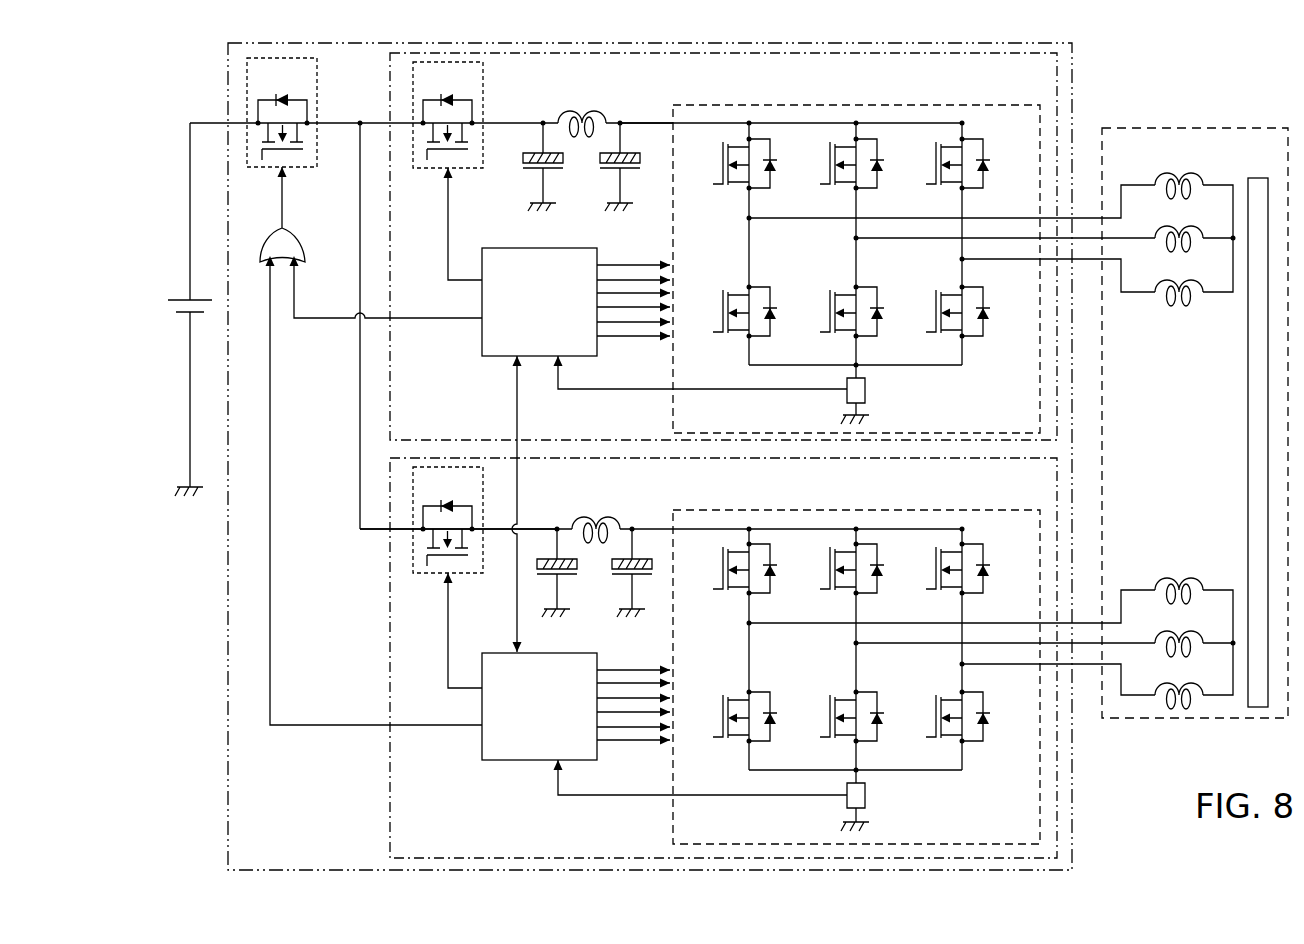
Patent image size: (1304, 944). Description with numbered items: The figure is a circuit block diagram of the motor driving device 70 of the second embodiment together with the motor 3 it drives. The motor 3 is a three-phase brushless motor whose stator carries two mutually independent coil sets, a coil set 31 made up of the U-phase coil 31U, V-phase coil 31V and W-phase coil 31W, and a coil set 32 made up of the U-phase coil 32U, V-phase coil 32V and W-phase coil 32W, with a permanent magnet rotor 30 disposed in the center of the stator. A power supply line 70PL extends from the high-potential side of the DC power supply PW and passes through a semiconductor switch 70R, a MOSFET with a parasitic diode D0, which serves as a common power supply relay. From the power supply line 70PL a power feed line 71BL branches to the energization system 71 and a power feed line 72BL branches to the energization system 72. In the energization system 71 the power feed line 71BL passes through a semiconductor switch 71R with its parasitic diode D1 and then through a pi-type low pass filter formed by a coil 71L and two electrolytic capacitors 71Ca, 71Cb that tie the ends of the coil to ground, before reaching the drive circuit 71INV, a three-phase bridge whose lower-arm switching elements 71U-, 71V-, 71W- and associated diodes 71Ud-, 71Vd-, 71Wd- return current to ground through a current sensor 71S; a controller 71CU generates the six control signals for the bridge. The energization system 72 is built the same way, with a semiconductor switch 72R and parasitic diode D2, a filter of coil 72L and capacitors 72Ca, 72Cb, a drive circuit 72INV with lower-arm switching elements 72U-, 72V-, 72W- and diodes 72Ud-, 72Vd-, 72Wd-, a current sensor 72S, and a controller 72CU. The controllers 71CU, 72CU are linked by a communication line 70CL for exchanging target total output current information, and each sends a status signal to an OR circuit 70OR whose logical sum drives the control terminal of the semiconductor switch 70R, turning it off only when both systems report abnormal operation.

The motor driving device 70 is at (1072, 72).
The energization system 71 is at (1057, 108).
The energization system 72 is at (1057, 798).
The motor 3 is at (1214, 128).
The rotor 30 is at (1248, 434).
The coil set 31 is at (1179, 320).
The coil set 32 is at (1178, 545).
The U-phase coil 31U is at (1180, 176).
The V-phase coil 31V is at (1179, 229).
The W-phase coil 31W is at (1182, 282).
The U-phase coil 32U is at (1180, 580).
The V-phase coil 32V is at (1179, 633).
The W-phase coil 32W is at (1182, 685).
The DC power supply PW is at (181, 298).
The semiconductor switch 70R is at (318, 92).
The power supply line 70PL is at (346, 128).
The OR circuit 70OR is at (286, 242).
The communication line 70CL is at (516, 384).
The parasitic diode D0 is at (279, 102).
The parasitic diode D1 is at (457, 104).
The parasitic diode D2 is at (457, 509).
The semiconductor switch 71R is at (484, 92).
The coil 71L is at (581, 116).
The power feed line 71BL is at (652, 120).
The electrolytic capacitor 71Ca is at (534, 172).
The electrolytic capacitor 71Cb is at (611, 172).
The controller 71CU is at (482, 344).
The drive circuit 71INV is at (673, 408).
The current sensor 71S is at (865, 386).
The lower-arm switching element 71U- is at (715, 318).
The lower-arm switching element 71V- is at (822, 318).
The lower-arm switching element 71W- is at (928, 318).
The first system U-phase lower diode 71Ud- is at (777, 314).
The first system V-phase lower diode 71Vd- is at (884, 314).
The first system W-phase lower diode 71Wd- is at (990, 314).
The semiconductor switch 72R is at (434, 574).
The coil 72L is at (593, 523).
The power feed line 72BL is at (539, 527).
The electrolytic capacitor 72Ca is at (550, 576).
The electrolytic capacitor 72Cb is at (624, 576).
The controller 72CU is at (482, 744).
The drive circuit 72INV is at (673, 818).
The current sensor 72S is at (865, 791).
The lower-arm switching element 72U- is at (715, 723).
The lower-arm switching element 72V- is at (822, 723).
The lower-arm switching element 72W- is at (928, 723).
The second system U-phase lower diode 72Ud- is at (777, 719).
The second system V-phase lower diode 72Vd- is at (884, 719).
The second system W-phase lower diode 72Wd- is at (990, 719).